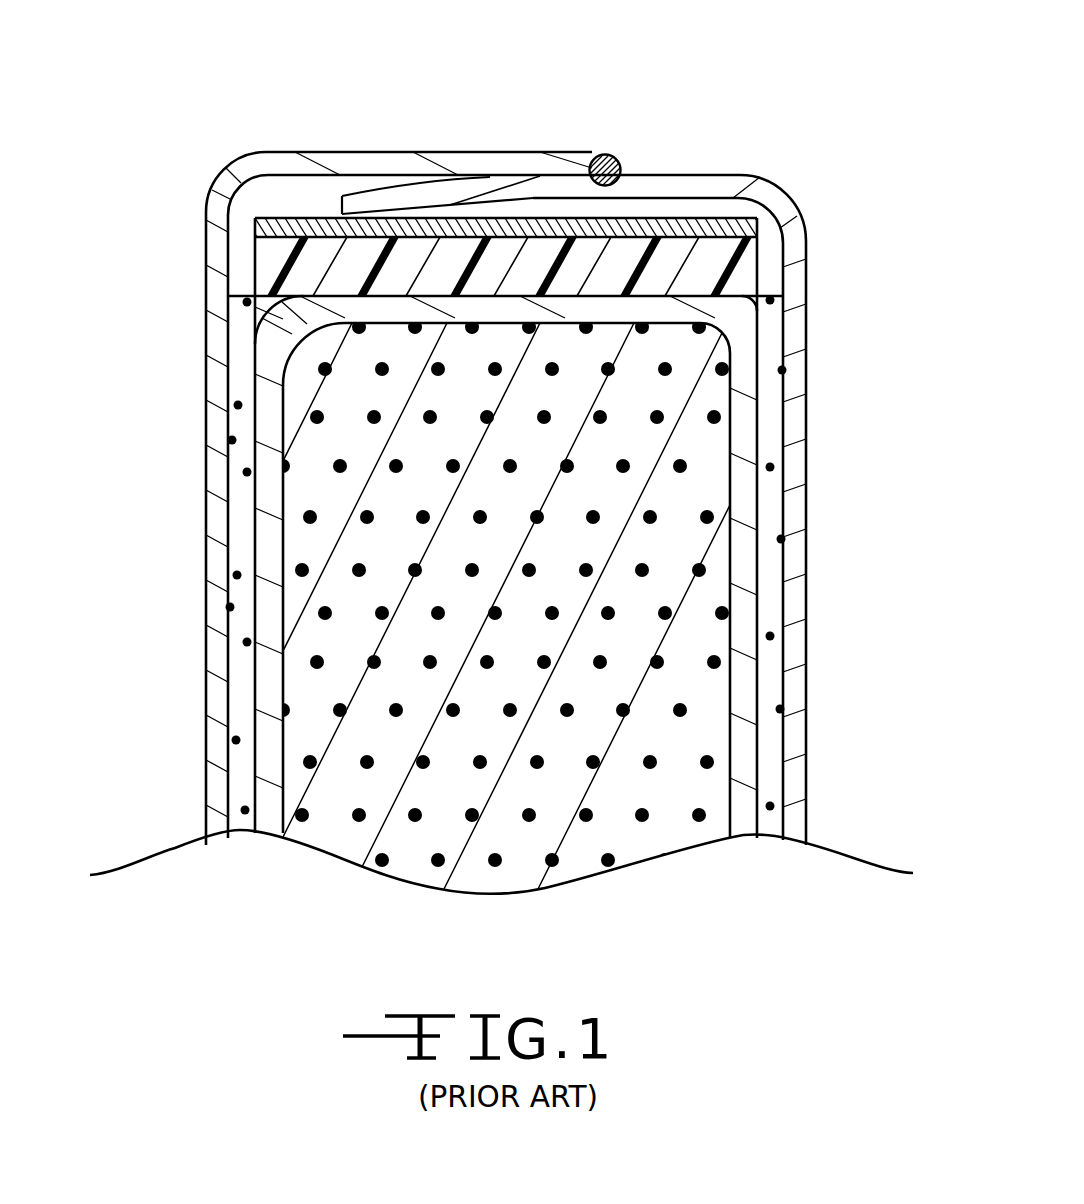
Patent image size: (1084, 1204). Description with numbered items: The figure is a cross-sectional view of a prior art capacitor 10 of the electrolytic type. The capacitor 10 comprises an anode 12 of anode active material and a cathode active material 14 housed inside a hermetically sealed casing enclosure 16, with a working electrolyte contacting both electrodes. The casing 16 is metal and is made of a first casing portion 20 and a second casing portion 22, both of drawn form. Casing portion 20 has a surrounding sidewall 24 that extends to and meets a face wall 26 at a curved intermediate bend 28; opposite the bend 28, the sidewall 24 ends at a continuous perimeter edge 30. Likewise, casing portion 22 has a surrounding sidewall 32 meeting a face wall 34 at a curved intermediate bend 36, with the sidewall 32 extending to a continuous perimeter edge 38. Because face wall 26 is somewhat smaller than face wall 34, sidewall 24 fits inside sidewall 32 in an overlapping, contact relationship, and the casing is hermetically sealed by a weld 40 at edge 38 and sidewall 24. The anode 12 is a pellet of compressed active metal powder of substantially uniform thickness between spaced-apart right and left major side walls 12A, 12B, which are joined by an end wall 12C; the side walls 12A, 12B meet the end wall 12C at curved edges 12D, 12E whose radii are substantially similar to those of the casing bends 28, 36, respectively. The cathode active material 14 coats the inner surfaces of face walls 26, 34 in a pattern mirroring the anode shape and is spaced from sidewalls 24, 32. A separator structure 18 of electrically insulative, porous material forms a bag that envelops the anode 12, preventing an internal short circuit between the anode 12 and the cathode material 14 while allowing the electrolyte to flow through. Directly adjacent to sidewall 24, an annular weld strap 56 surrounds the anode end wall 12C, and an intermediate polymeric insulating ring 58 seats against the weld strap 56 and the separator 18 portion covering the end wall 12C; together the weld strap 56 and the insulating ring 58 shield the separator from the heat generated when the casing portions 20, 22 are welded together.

The capacitor 10 is at (798, 98).
The anode 12 is at (701, 745).
The right major side wall 12A is at (730, 808).
The left major side wall 12B is at (283, 685).
The end wall 12C is at (484, 327).
The curved edge 12D is at (690, 326).
The curved edge 12E is at (283, 336).
The cathode active material 14 is at (242, 492).
The casing enclosure 16 is at (822, 213).
The separator structure 18 is at (745, 680).
The first casing portion 20 is at (808, 257).
The second casing portion 22 is at (207, 273).
The sidewall 24 is at (612, 197).
The face wall 26 is at (796, 561).
The curved intermediate bend 28 is at (783, 201).
The perimeter edge 30 is at (342, 196).
The sidewall 32 is at (359, 163).
The face wall 34 is at (213, 605).
The curved intermediate bend 36 is at (210, 195).
The perimeter edge 38 is at (600, 156).
The weld 40 is at (620, 152).
The weld strap 56 is at (441, 224).
The insulating ring 58 is at (364, 257).